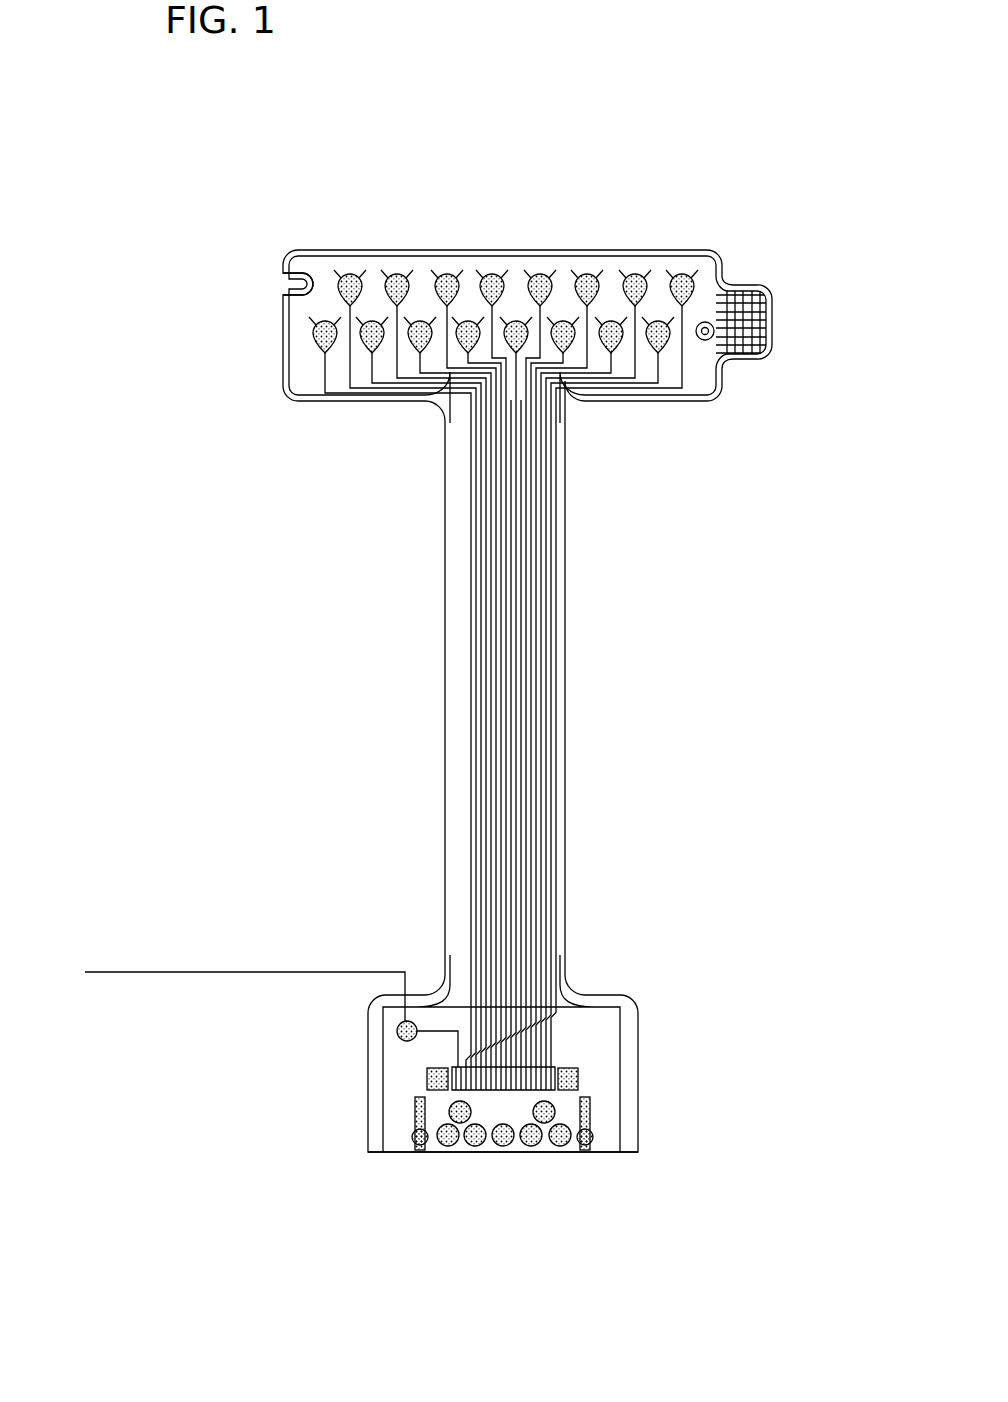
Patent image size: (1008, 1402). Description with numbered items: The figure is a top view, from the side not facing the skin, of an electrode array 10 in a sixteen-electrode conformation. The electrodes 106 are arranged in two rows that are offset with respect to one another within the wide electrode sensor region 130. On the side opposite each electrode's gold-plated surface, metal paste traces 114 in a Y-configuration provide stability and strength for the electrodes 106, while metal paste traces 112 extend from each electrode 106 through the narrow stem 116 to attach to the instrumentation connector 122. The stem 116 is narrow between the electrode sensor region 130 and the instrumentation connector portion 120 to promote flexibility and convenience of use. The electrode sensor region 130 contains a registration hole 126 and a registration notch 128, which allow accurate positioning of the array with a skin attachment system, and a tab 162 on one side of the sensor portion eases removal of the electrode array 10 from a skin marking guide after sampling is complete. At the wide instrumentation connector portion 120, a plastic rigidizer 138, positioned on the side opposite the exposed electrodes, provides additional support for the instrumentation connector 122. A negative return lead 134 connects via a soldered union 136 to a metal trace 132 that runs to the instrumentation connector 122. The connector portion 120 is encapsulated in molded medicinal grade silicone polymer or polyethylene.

The electrode array 10 is at (490, 1327).
The electrodes 106 is at (445, 272).
The metal paste traces 112 is at (466, 340).
The metal paste traces in a Y-configuration 114 is at (703, 273).
The stem 116 is at (458, 680).
The instrumentation connector portion 120 is at (640, 1115).
The instrumentation connector 122 is at (435, 1152).
The registration hole 126 is at (713, 327).
The registration notch 128 is at (291, 290).
The electrode sensor region 130 is at (703, 377).
The metal trace 132 is at (438, 1031).
The negative return lead 134 is at (250, 973).
The soldered union 136 is at (400, 1040).
The plastic rigidizer 138 is at (607, 1045).
The tab 162 is at (773, 316).